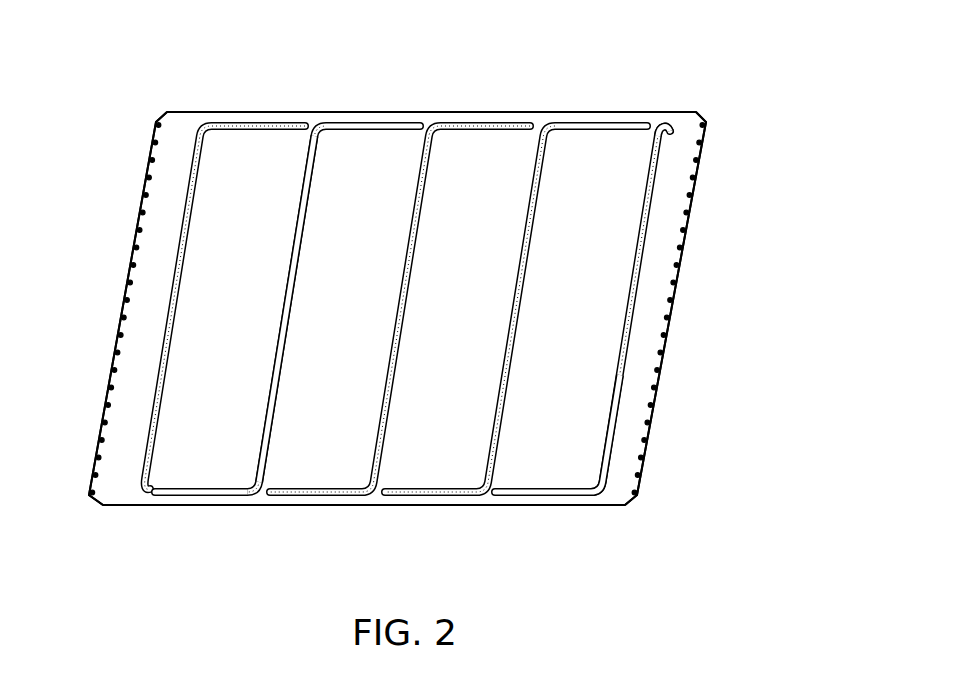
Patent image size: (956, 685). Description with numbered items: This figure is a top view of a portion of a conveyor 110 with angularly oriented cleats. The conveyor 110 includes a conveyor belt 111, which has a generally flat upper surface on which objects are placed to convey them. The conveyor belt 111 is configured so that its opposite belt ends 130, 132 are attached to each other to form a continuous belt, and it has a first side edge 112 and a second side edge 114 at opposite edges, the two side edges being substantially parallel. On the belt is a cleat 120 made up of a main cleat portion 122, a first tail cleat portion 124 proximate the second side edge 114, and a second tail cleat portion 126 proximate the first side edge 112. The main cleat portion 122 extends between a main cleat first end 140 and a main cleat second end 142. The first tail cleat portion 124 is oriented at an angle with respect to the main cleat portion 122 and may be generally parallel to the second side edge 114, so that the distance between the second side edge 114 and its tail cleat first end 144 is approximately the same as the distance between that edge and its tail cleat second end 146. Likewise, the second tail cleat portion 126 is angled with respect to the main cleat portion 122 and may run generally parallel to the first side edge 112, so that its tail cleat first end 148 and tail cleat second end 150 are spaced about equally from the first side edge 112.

The conveyor 110 is at (717, 80).
The conveyor belt 111 is at (648, 342).
The first side edge 112 is at (453, 112).
The second side edge 114 is at (368, 505).
The cleat 120 is at (292, 183).
The main cleat portion 122 is at (310, 162).
The first tail cleat portion 124 is at (358, 122).
The second tail cleat portion 126 is at (202, 496).
The first belt end 130 is at (113, 338).
The second belt end 132 is at (678, 283).
The main cleat first end 140 is at (663, 143).
The main cleat second end 142 is at (607, 477).
The tail cleat first end 144 is at (581, 496).
The tail cleat second end 146 is at (505, 496).
The tail cleat first end 148 is at (565, 122).
The tail cleat second end 150 is at (634, 122).